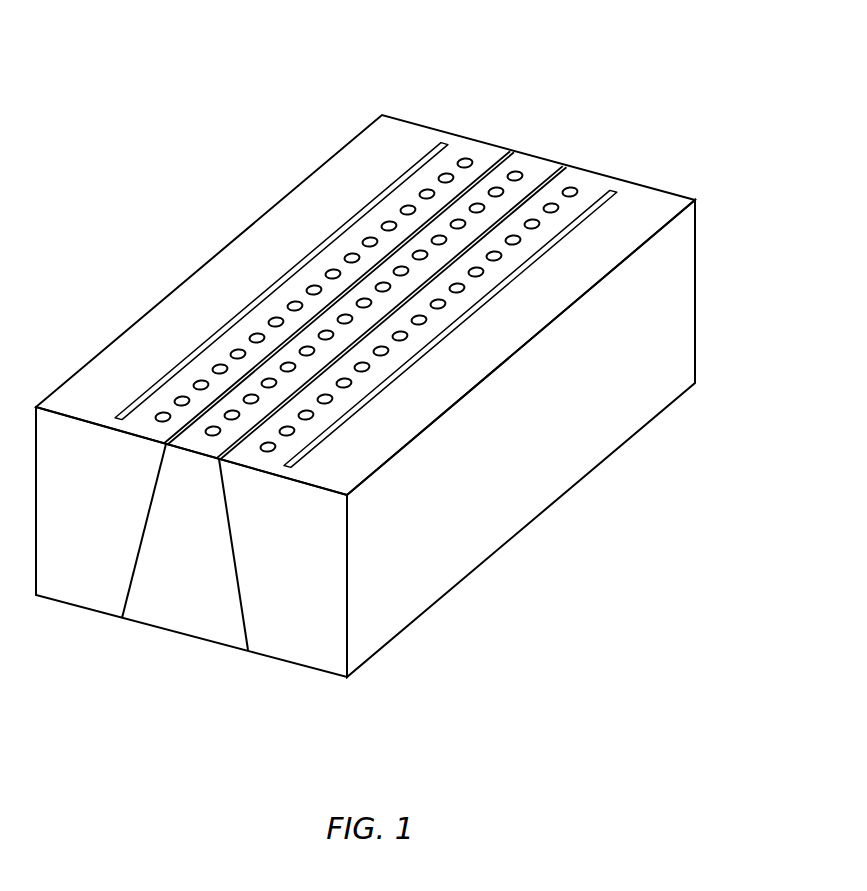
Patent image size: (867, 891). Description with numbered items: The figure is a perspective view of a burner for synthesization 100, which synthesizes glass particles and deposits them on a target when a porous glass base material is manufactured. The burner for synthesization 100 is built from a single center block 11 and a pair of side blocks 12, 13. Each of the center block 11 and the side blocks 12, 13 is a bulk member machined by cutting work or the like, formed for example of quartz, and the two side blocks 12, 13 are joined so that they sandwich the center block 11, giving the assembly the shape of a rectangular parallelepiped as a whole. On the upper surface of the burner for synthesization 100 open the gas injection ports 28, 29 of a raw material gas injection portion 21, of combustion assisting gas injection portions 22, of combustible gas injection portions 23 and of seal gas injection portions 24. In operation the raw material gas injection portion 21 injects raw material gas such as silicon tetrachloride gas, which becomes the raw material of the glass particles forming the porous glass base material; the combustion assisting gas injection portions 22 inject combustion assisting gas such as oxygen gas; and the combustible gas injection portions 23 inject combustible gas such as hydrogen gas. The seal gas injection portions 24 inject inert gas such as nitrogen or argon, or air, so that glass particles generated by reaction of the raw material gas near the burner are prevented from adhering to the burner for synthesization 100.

The burner for synthesization 100 is at (154, 189).
The center block 11 is at (123, 624).
The side block 12 is at (35, 600).
The side block 13 is at (249, 657).
The raw material gas injection portion 21 is at (538, 157).
The combustion assisting gas injection portion 22 is at (476, 140).
The combustible gas injection portion 23 is at (457, 135).
The seal gas injection portion 24 is at (520, 152).
The gas injection port 28 is at (438, 299).
The gas injection port 29 is at (380, 257).